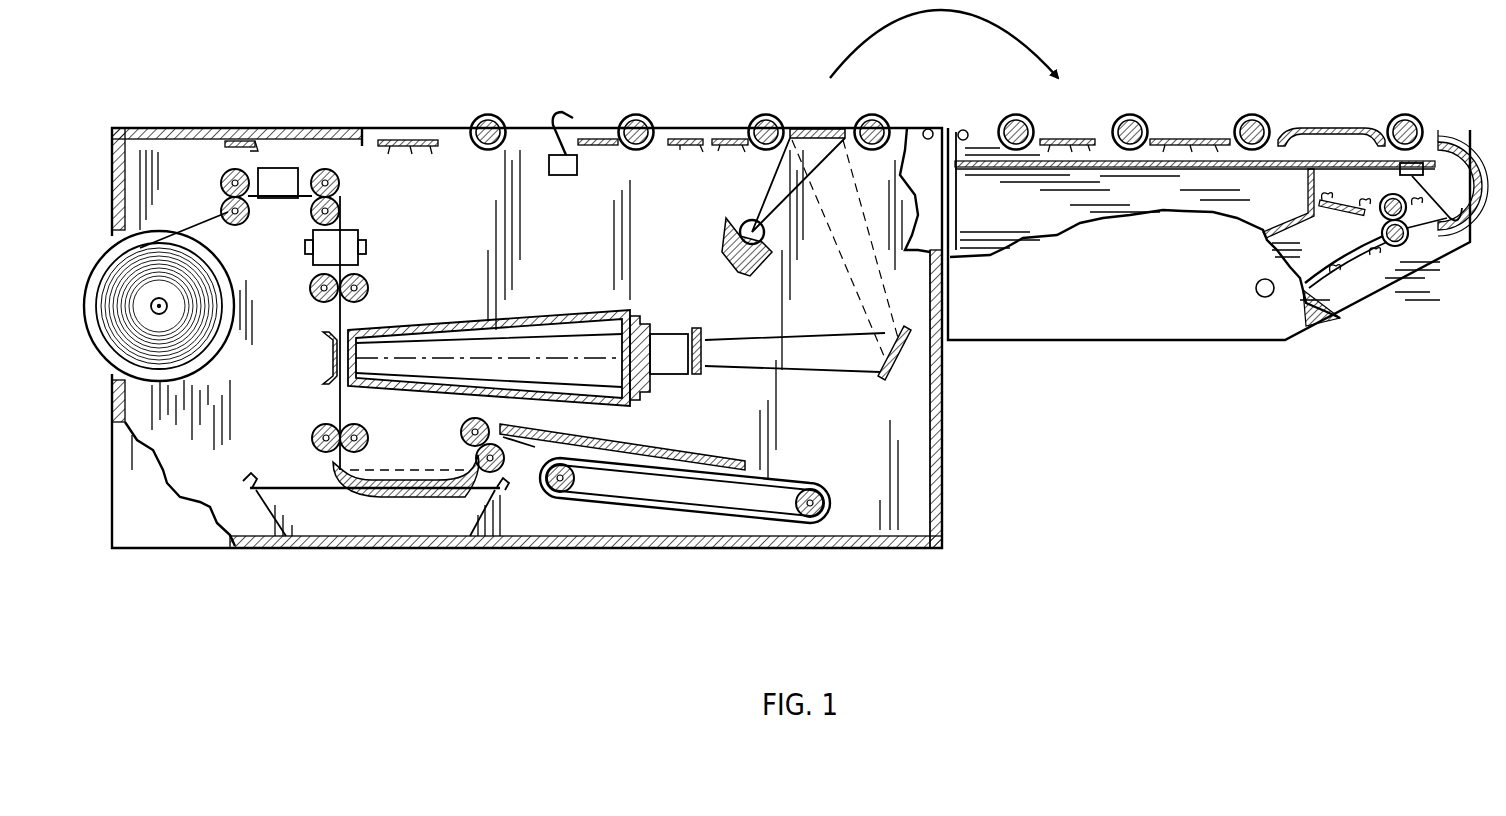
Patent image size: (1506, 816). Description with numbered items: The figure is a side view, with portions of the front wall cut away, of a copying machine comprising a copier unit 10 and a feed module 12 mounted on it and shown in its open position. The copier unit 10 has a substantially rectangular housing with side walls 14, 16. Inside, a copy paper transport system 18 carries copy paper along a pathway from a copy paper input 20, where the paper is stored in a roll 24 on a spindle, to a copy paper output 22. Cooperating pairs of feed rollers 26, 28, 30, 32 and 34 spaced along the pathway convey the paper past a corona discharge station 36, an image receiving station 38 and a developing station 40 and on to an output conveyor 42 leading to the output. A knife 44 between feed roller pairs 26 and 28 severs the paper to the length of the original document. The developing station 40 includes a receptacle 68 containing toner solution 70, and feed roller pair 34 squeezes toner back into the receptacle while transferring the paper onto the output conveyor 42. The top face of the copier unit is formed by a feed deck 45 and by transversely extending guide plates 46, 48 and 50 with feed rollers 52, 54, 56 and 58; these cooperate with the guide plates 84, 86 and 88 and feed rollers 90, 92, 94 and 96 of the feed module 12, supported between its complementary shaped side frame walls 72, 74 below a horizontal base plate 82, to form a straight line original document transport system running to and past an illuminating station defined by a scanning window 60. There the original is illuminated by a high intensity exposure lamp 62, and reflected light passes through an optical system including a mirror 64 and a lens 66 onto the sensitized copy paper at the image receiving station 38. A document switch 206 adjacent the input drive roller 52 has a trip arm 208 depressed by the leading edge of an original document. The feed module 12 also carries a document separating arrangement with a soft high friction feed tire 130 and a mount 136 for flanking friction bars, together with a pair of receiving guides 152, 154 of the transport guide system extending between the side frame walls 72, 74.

The copier unit 10 is at (980, 456).
The feed module 12 is at (1162, 384).
The side wall 14 is at (163, 548).
The side wall 16 is at (888, 490).
The copy paper transport system 18 is at (428, 234).
The copy paper input 20 is at (176, 212).
The copy paper output 22 is at (795, 466).
The roll 24 is at (205, 320).
The feed rollers 26 is at (222, 176).
The feed rollers 28 is at (340, 182).
The feed rollers 30 is at (366, 283).
The feed rollers 32 is at (326, 424).
The feed rollers 34 is at (465, 428).
The corona discharge station 36 is at (355, 232).
The image receiving station 38 is at (312, 368).
The developing station 40 is at (305, 470).
The output conveyor 42 is at (580, 500).
The knife 44 is at (285, 200).
The feed deck 45 is at (268, 128).
The guide plate 46 is at (345, 130).
The guide plate 48 is at (580, 128).
The guide plate 50 is at (695, 128).
The feed roller 52 is at (478, 118).
The feed roller 54 is at (632, 118).
The feed roller 56 is at (790, 106).
The feed roller 58 is at (868, 118).
The scanning window 60 is at (815, 128).
The exposure lamp 62 is at (750, 222).
The mirror 64 is at (886, 378).
The lens 66 is at (702, 372).
The receptacle 68 is at (480, 548).
The toner solution 70 is at (385, 498).
The side frame wall 72 is at (1006, 208).
The side frame wall 74 is at (1080, 278).
The base plate 82 is at (1228, 169).
The guide plate 84 is at (1318, 128).
The guide plate 86 is at (1188, 128).
The guide plate 88 is at (1068, 128).
The feed roller 90 is at (1410, 118).
The feed roller 92 is at (1250, 118).
The feed roller 94 is at (1125, 118).
The feed roller 96 is at (1020, 118).
The feed tire 130 is at (1332, 308).
The mount 136 is at (1296, 206).
The receiving guide 152 is at (1380, 250).
The receiving guide 154 is at (1358, 218).
The document switch 206 is at (578, 168).
The trip arm 208 is at (562, 108).